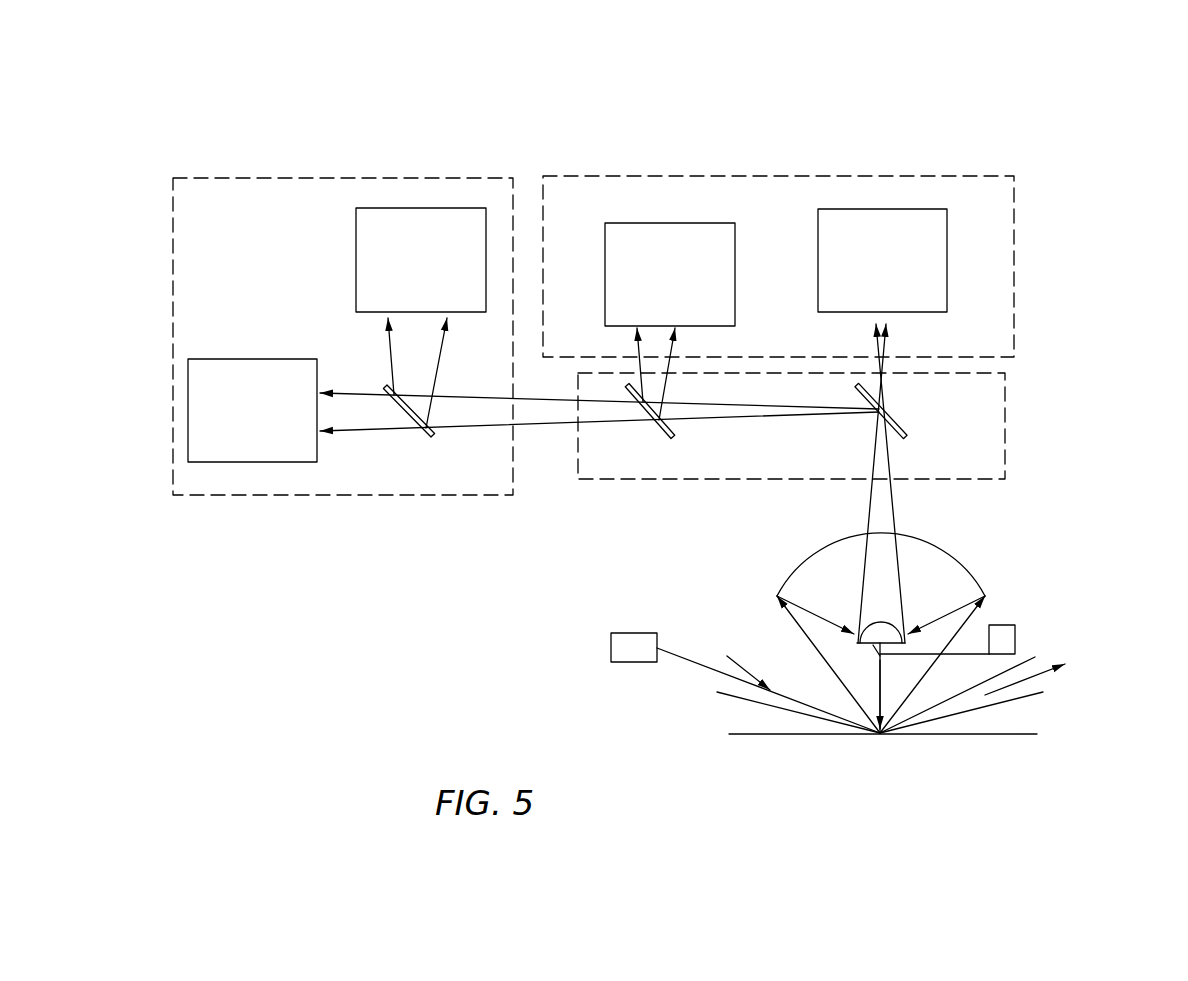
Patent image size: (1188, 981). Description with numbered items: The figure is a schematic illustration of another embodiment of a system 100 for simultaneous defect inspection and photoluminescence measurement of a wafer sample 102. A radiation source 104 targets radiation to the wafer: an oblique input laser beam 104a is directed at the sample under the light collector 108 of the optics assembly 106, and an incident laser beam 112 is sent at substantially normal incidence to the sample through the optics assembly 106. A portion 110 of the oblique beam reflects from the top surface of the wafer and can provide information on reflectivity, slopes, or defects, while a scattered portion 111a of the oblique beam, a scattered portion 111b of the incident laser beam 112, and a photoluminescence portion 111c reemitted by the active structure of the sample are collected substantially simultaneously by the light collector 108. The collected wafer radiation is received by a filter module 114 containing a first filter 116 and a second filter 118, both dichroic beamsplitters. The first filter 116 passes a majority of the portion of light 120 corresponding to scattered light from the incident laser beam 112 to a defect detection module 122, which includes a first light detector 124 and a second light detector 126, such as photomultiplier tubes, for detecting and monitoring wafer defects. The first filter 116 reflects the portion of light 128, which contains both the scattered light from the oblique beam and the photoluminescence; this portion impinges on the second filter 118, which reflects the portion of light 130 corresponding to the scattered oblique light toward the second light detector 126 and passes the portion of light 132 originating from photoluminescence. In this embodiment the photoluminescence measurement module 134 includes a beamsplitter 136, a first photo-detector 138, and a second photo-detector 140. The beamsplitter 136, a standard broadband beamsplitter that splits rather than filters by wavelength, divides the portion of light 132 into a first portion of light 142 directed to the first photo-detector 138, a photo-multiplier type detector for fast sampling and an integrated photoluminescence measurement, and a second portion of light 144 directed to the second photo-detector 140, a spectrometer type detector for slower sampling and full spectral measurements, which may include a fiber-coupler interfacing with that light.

The system 100 is at (328, 122).
The wafer sample 102 is at (777, 735).
The radiation source 104 is at (627, 633).
The oblique input laser beam 104a is at (688, 663).
The optics assembly 106 is at (1046, 556).
The light collector 108 is at (832, 543).
The reflected portion of the input laser beam 110 is at (1037, 676).
The scattered portion of the input laser beam 111a is at (790, 627).
The scattered portion of the incident laser beam 111b is at (990, 608).
The photoluminescence portion 111c is at (825, 660).
The incident laser beam 112 is at (928, 632).
The filter module 114 is at (1005, 378).
The first filter 116 is at (900, 425).
The second filter 118 is at (655, 432).
The portion of light 120 is at (892, 340).
The defect detection module 122 is at (1014, 235).
The first light detector 124 is at (883, 209).
The second light detector 126 is at (700, 223).
The portion of light 128 is at (740, 418).
The portion of light 130 is at (682, 350).
The portion of light 132 is at (540, 425).
The photoluminescence measurement module 134 is at (395, 177).
The beamsplitter 136 is at (428, 443).
The first photo-detector 138 is at (208, 360).
The second photo-detector 140 is at (357, 225).
The first portion of light 142 is at (369, 433).
The second portion of light 144 is at (443, 343).